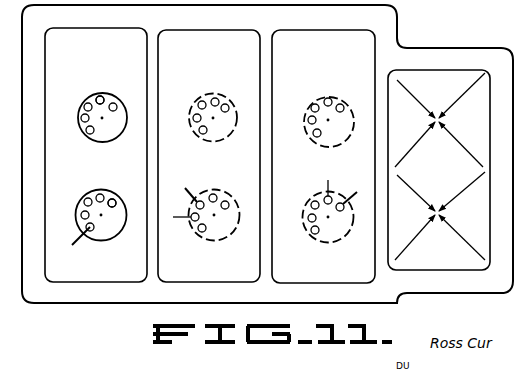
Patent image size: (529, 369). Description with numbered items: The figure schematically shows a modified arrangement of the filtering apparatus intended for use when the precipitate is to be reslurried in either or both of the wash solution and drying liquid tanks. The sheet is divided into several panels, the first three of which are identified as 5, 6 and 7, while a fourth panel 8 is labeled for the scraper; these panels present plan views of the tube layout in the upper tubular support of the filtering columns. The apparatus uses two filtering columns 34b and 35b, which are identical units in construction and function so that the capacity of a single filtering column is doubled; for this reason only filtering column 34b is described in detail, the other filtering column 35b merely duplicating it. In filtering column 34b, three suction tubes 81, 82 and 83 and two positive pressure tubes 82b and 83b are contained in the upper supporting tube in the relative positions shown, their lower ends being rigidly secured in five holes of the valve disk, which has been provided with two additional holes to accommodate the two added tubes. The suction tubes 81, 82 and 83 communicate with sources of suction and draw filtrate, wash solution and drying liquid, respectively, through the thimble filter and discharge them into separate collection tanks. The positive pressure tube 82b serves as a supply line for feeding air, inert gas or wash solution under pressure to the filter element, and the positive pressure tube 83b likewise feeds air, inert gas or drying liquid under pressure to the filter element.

The first compartment panel 5 is at (100, 50).
The second compartment panel 6 is at (213, 52).
The third compartment panel 7 is at (328, 54).
The scraper compartment panel 8 is at (442, 177).
The filtering column 34b is at (103, 96).
The filtering column 35b is at (122, 197).
The suction tube 81 is at (88, 132).
The suction tube 82 is at (84, 107).
The positive pressure tube 82b is at (82, 120).
The suction tube 83 is at (116, 104).
The positive pressure tube 83b is at (97, 97).